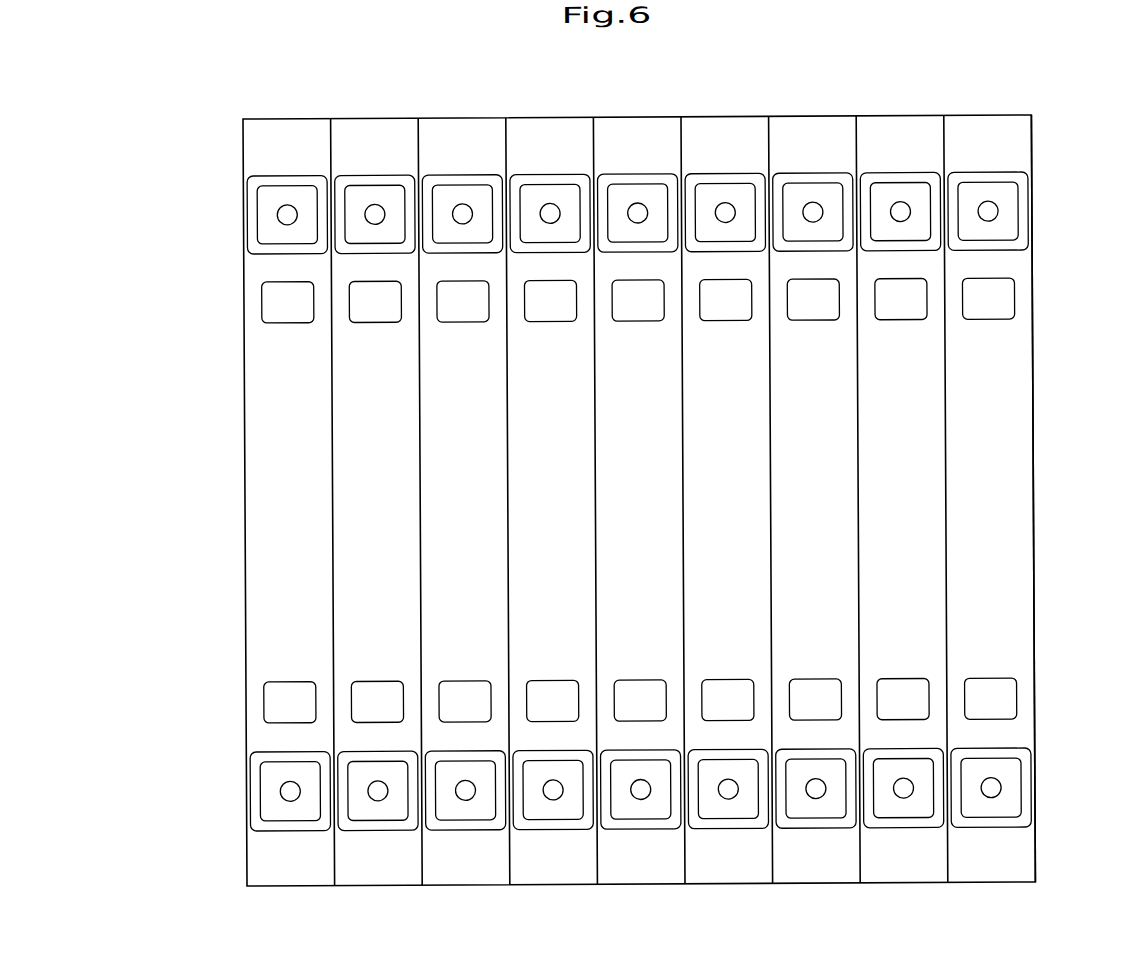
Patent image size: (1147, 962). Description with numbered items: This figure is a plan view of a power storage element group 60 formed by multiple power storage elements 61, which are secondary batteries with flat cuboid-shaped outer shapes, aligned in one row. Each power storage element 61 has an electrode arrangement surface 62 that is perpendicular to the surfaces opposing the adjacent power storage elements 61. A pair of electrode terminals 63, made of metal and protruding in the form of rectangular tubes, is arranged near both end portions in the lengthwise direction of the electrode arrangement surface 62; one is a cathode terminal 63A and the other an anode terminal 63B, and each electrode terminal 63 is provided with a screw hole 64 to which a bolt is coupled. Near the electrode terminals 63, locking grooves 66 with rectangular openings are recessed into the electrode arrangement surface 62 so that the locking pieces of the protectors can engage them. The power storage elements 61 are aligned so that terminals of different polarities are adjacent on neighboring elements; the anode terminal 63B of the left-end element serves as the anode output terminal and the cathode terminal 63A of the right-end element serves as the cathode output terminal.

The power storage element group 60 is at (708, 914).
The power storage element 61 is at (289, 136).
The electrode arrangement surface 62 is at (1021, 422).
The electrode terminal 63 is at (618, 500).
The cathode terminal 63A is at (884, 198).
The anode terminal 63B is at (603, 500).
The screw hole 64 is at (999, 214).
The locking groove 66 is at (984, 280).